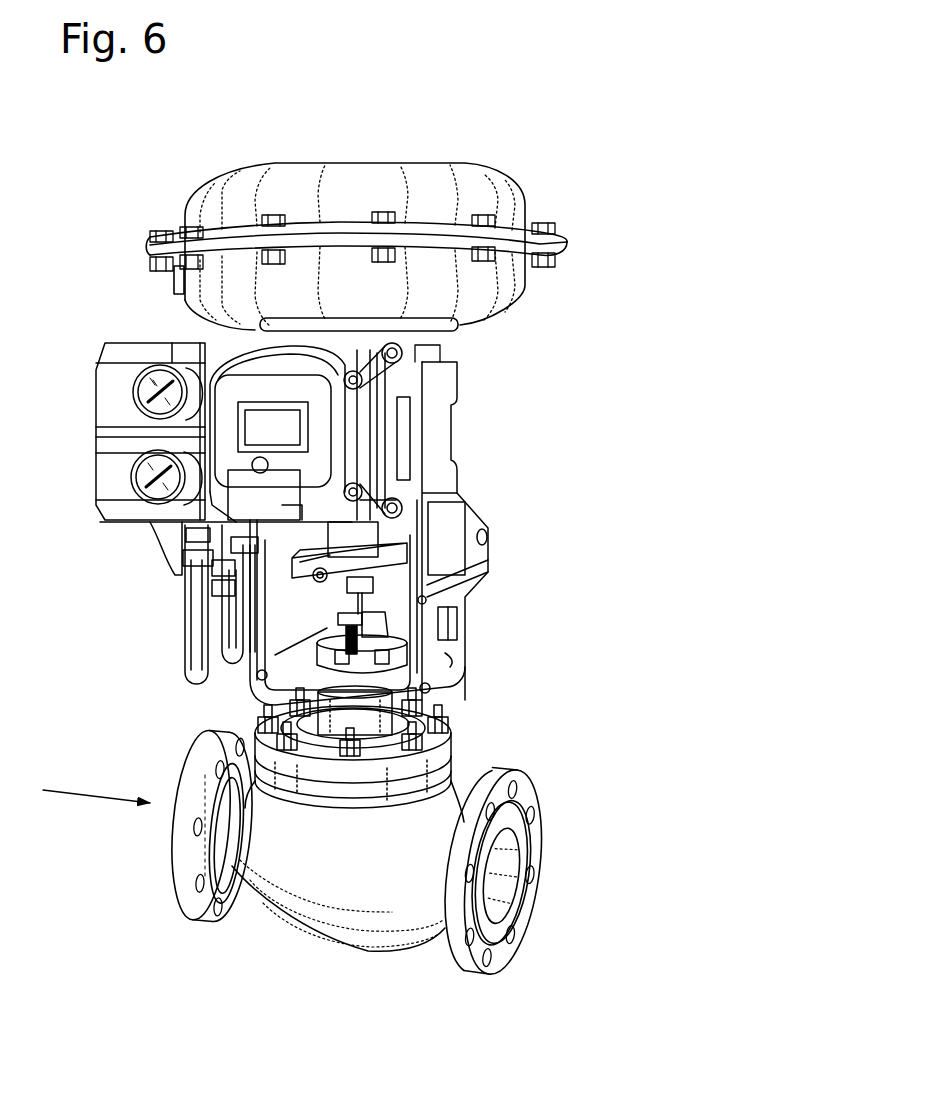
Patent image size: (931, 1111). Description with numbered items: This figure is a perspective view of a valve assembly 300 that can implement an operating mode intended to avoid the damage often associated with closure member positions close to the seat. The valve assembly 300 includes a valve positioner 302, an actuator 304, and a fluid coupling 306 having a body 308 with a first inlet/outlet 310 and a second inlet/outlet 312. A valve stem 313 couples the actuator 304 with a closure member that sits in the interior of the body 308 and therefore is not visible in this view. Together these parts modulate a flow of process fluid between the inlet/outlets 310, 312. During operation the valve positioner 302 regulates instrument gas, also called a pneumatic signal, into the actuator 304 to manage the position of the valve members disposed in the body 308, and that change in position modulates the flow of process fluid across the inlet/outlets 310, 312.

The valve assembly 300 is at (478, 116).
The valve positioner 302 is at (97, 437).
The actuator 304 is at (510, 326).
The fluid coupling 306 is at (313, 957).
The body 308 is at (252, 912).
The first inlet/outlet 310 is at (155, 847).
The second inlet/outlet 312 is at (542, 934).
The valve stem 313 is at (343, 600).